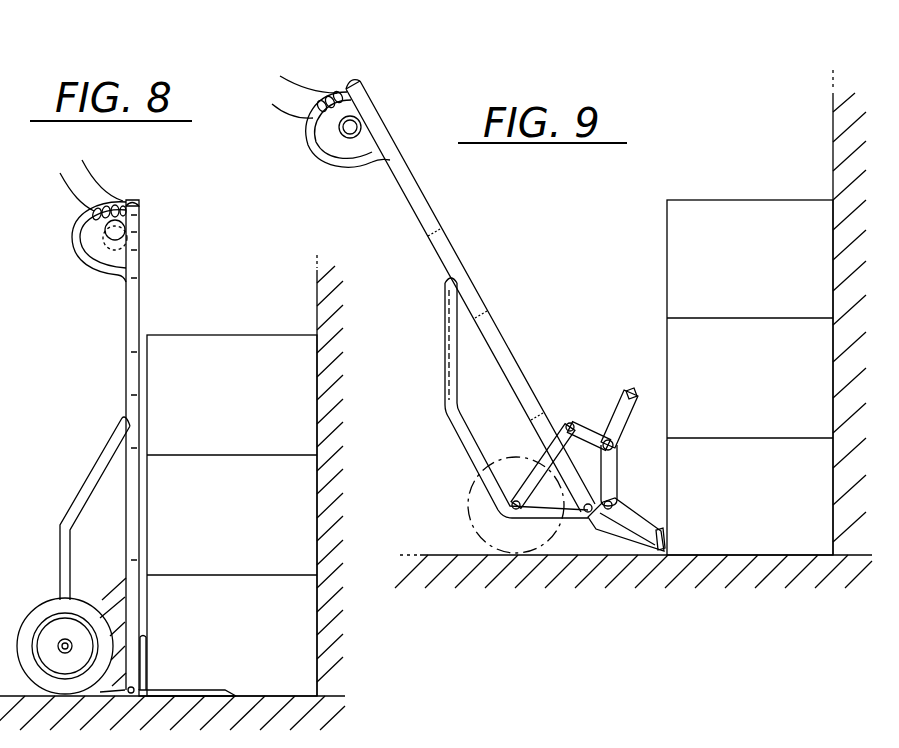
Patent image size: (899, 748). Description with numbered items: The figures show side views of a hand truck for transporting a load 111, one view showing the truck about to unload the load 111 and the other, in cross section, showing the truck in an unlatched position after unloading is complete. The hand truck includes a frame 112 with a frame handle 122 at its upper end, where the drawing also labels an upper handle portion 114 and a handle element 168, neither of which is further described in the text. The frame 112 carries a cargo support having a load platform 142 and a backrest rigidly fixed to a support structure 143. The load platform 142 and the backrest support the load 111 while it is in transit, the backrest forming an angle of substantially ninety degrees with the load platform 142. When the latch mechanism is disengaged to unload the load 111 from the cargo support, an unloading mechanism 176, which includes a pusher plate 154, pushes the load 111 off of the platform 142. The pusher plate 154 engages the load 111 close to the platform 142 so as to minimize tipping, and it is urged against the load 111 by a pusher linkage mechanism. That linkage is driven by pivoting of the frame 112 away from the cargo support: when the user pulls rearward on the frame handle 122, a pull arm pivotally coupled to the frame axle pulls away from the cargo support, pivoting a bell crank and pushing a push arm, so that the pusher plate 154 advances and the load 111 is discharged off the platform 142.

In FIG. 8, the load 111 is at (246, 649).
In FIG. 9, the load 111 is at (771, 508).
In FIG. 8, the frame 112 is at (127, 380).
In FIG. 9, the frame 112 is at (446, 240).
In FIG. 8, the handle grip top 114 is at (141, 202).
In FIG. 9, the handle grip top 114 is at (357, 84).
In FIG. 8, the frame handle 122 is at (96, 274).
In FIG. 9, the frame handle 122 is at (313, 143).
In FIG. 8, the load platform 142 is at (223, 694).
In FIG. 9, the load platform 142 is at (620, 536).
In FIG. 9, the support structure 143 is at (614, 412).
In FIG. 9, the pusher plate 154 is at (658, 530).
In FIG. 8, the release knob 168 is at (140, 237).
In FIG. 9, the release knob 168 is at (352, 128).
In FIG. 9, the unloading mechanism 176 is at (634, 370).